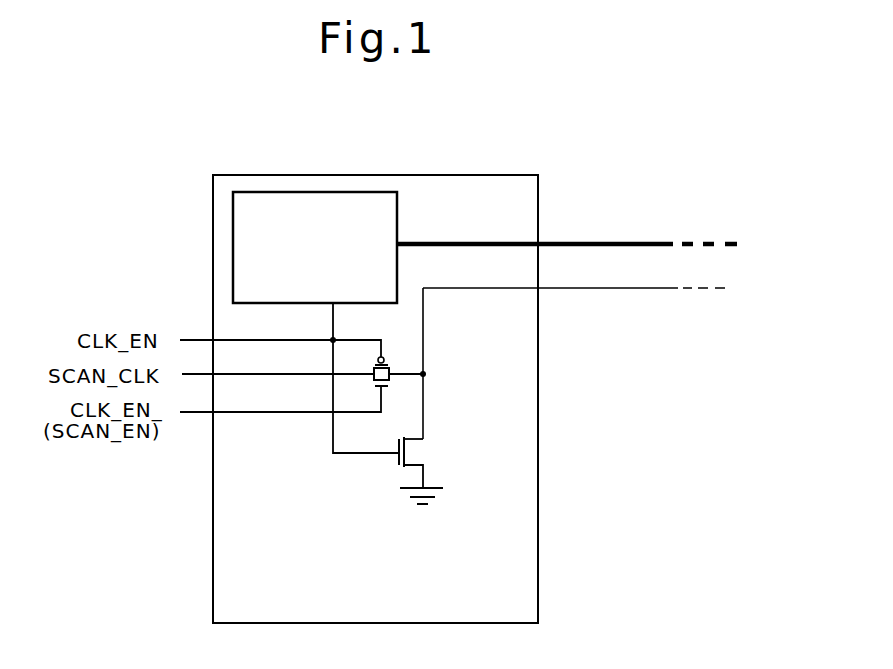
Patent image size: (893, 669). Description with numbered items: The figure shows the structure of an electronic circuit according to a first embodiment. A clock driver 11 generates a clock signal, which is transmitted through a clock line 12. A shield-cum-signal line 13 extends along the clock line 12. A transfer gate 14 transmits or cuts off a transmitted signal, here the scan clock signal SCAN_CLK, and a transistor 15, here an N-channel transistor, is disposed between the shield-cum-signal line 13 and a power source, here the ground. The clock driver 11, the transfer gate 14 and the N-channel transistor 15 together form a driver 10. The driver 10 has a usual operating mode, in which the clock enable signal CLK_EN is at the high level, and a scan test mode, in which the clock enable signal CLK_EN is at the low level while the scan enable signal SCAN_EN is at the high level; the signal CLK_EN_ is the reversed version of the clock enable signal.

The driver 10 is at (441, 175).
The clock driver 11 is at (324, 192).
The clock line 12 is at (542, 244).
The shield-cum-signal line 13 is at (545, 290).
The transfer gate 14 is at (396, 361).
The transistor 15 is at (418, 452).